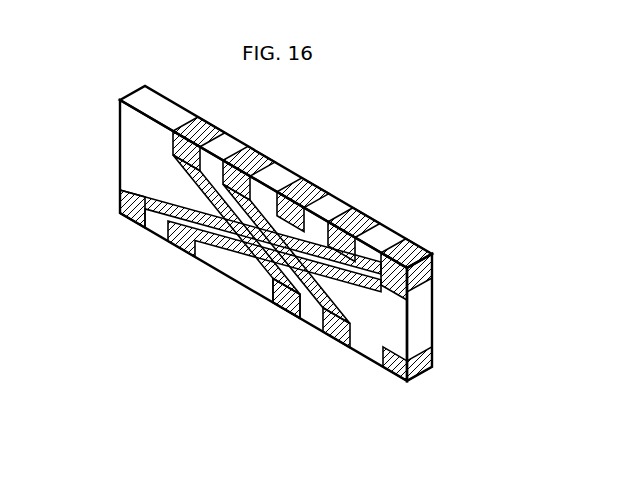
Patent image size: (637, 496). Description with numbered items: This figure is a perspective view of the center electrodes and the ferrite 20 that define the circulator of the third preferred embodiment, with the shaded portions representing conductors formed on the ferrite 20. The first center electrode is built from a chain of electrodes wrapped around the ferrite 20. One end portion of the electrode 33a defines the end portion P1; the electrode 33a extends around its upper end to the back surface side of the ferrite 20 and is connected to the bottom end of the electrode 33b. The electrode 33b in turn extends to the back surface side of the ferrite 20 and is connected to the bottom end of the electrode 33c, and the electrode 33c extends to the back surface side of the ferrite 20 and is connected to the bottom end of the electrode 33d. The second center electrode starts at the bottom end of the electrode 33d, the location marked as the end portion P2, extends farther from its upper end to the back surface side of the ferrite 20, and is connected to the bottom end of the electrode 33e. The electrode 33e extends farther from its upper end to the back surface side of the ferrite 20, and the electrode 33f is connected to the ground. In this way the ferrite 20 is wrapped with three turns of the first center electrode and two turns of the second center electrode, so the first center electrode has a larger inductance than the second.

The ferrite 20 is at (120, 134).
The electrode 33a is at (152, 232).
The electrode 33b is at (210, 266).
The electrode 33c is at (375, 287).
The electrode 33d is at (269, 277).
The electrode 33e is at (322, 307).
The electrode 33f is at (391, 377).
The end portion P1 is at (120, 200).
The end portion P2 is at (288, 312).